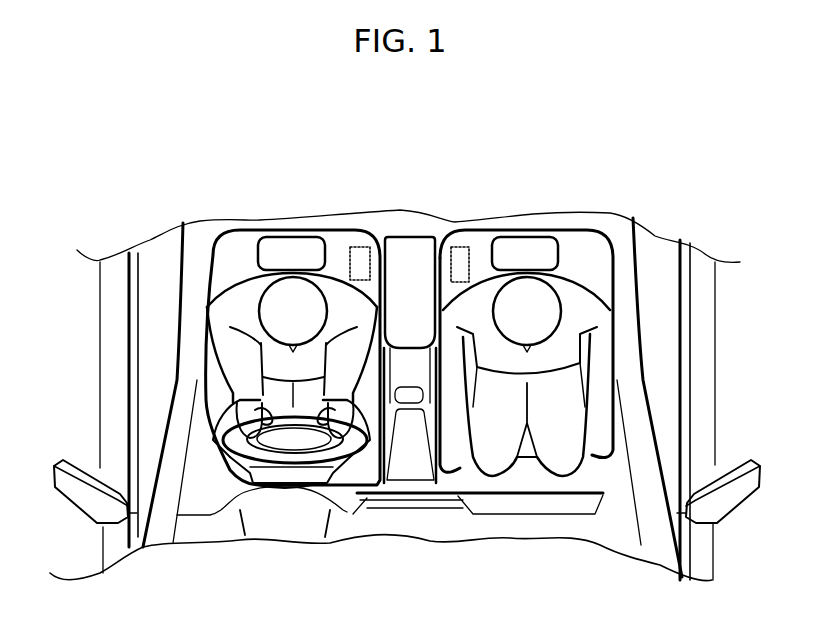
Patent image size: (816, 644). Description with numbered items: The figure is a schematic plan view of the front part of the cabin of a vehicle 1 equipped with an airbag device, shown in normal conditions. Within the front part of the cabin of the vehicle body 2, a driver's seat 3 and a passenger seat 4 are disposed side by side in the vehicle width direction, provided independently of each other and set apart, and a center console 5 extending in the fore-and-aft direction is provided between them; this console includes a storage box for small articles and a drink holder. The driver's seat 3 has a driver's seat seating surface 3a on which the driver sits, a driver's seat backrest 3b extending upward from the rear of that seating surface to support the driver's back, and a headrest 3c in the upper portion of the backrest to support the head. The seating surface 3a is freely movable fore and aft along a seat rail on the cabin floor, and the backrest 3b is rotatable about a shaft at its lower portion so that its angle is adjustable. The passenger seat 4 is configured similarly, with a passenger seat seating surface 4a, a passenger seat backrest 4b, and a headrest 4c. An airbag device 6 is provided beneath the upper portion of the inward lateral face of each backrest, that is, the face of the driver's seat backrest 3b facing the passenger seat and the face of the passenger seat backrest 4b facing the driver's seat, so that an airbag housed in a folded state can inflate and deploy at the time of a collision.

The vehicle 1 is at (92, 329).
The vehicle body 2 is at (110, 363).
The driver's seat 3 is at (233, 268).
The driver's seat seating surface 3a is at (220, 394).
The driver's seat backrest 3b is at (245, 242).
The headrest 3c is at (288, 237).
The passenger seat 4 is at (588, 270).
The passenger seat seating surface 4a is at (597, 397).
The passenger seat backrest 4b is at (572, 240).
The headrest 4c is at (515, 237).
The center console 5 is at (415, 243).
The airbag device 6 is at (361, 246).